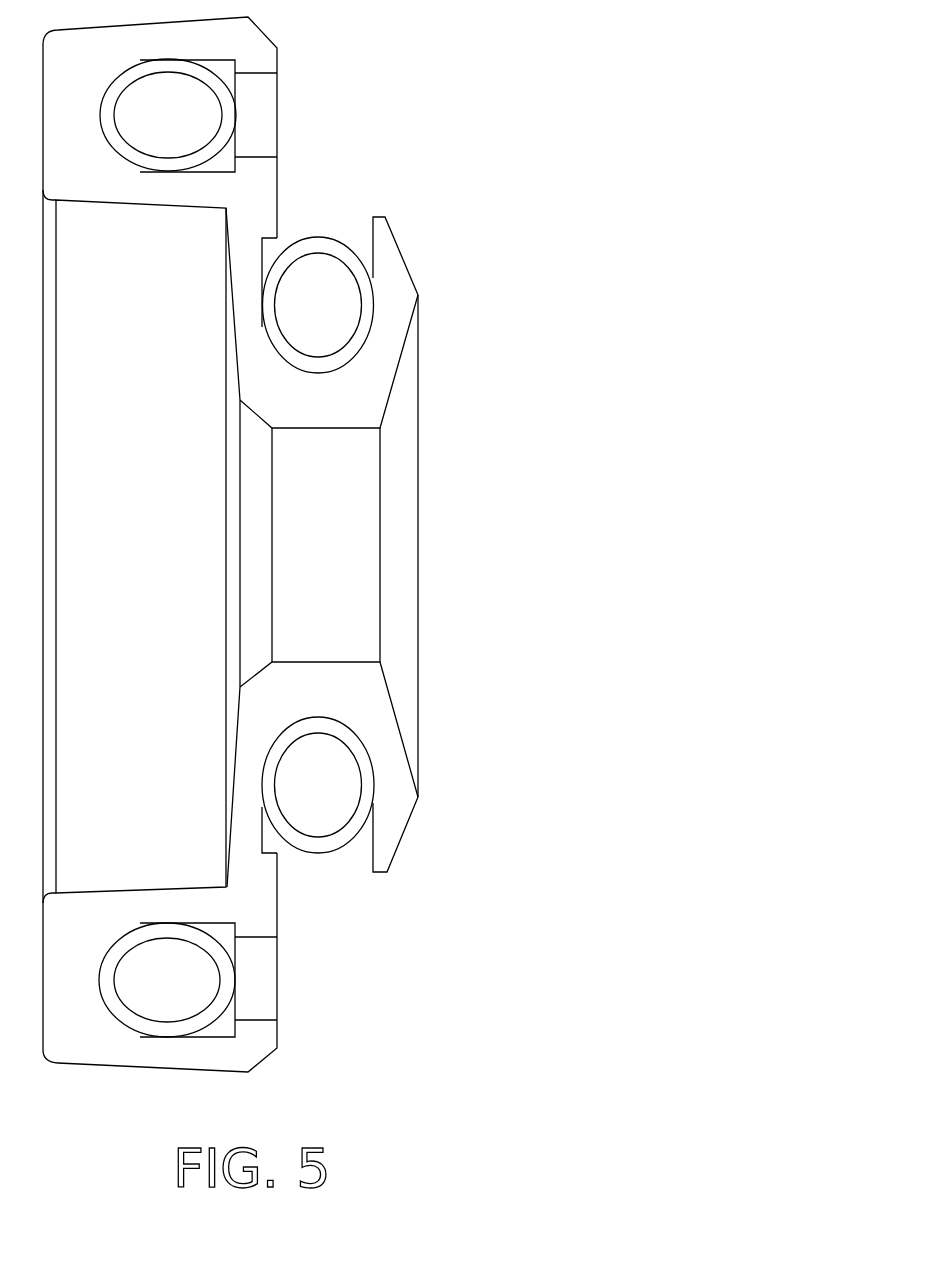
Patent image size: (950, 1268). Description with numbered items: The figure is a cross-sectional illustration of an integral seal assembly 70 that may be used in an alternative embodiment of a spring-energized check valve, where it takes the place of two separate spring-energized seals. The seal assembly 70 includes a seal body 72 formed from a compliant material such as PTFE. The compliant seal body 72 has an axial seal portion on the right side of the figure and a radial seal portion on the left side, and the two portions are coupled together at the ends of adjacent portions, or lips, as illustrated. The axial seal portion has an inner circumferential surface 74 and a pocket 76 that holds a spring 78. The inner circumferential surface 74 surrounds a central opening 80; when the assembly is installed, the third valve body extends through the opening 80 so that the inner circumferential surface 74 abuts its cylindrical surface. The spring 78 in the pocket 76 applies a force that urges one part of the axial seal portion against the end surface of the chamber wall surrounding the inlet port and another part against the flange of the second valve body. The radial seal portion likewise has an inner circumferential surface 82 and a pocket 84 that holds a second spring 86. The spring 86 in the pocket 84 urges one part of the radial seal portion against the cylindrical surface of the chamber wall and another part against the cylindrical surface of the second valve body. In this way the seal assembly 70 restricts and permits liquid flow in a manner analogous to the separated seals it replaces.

The integral seal assembly 70 is at (344, 544).
The seal body 72 is at (278, 178).
The inner circumferential surface 74 is at (353, 430).
The pocket 76 is at (340, 540).
The spring 78 is at (295, 260).
The central opening 80 is at (337, 533).
The inner circumferential surface 82 is at (158, 208).
The pocket 84 is at (228, 152).
The second spring 86 is at (143, 78).